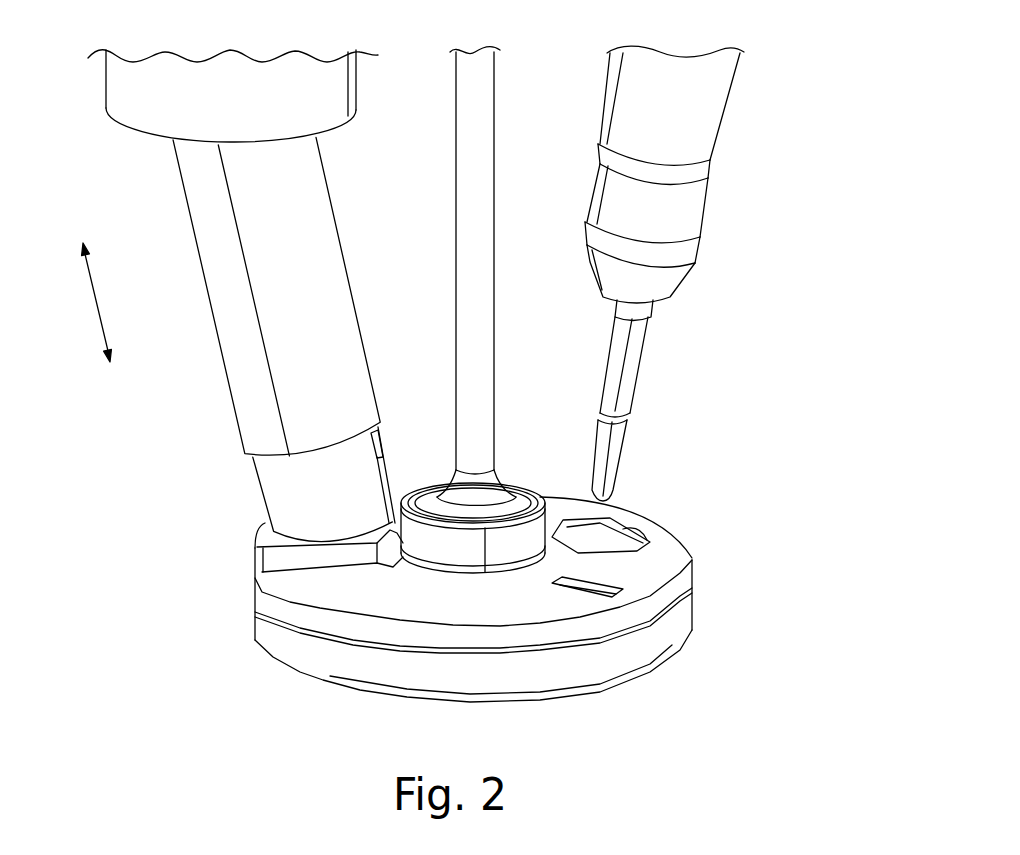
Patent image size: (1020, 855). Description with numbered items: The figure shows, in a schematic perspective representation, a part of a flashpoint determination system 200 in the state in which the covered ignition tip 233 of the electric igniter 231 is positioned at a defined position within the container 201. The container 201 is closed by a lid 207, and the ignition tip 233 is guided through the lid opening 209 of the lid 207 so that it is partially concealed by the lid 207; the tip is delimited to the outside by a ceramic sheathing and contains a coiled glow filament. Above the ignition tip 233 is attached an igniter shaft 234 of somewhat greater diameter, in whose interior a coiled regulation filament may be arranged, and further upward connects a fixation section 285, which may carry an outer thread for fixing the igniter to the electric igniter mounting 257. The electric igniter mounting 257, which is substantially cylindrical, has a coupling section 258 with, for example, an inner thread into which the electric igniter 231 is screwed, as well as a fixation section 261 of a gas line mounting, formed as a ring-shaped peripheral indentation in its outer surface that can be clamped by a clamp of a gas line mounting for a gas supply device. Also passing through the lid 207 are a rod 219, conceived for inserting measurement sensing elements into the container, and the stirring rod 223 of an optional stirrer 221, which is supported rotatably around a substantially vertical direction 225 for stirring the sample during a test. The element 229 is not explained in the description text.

The flashpoint determination system 200 is at (465, 359).
The container 201 is at (252, 620).
The lid 207 is at (697, 576).
The lid opening 209 is at (575, 512).
The rod 219 is at (222, 353).
The stirrer 221 is at (430, 400).
The stirring rod 223 is at (455, 240).
The substantially vertical direction 225 is at (97, 303).
The instrument housing 229 is at (739, 145).
The electric igniter 231 is at (707, 360).
The ignition tip 233 is at (654, 492).
The igniter shaft 234 is at (612, 370).
The electric igniter mounting 257 is at (719, 273).
The coupling section 258 is at (712, 271).
The fixation section of a gas line mounting 261 is at (714, 167).
The fixation section 285 is at (612, 302).